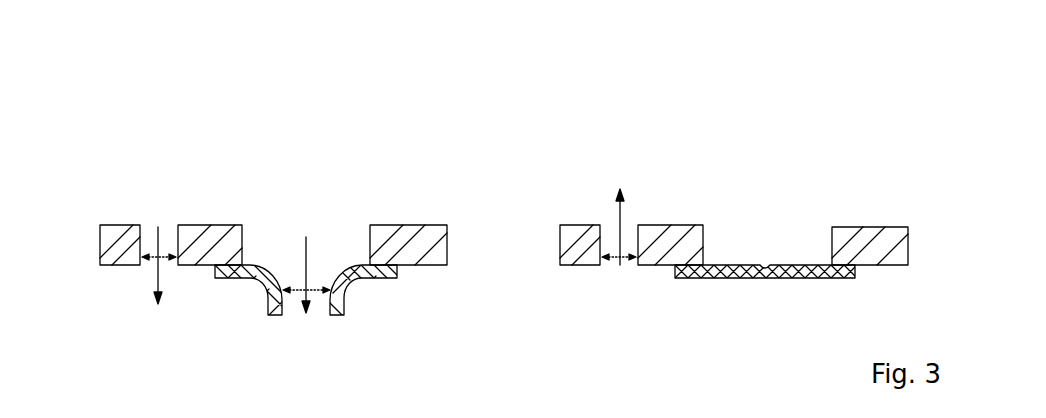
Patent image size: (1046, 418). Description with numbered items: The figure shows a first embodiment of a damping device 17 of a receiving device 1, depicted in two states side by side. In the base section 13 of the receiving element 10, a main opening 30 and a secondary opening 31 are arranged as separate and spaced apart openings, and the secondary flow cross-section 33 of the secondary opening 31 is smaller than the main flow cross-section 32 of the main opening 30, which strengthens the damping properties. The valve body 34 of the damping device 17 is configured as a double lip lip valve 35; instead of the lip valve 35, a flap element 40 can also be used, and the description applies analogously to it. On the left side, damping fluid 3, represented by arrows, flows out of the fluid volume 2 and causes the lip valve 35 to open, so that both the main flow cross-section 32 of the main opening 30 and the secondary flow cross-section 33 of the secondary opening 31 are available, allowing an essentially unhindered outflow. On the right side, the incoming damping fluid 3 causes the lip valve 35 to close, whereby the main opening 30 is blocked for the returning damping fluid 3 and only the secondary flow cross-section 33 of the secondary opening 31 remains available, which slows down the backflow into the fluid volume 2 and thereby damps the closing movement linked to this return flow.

The receiving device 1 is at (163, 97).
The fluid volume 2 is at (216, 150).
The damping fluid 3 is at (148, 262).
The receiving element 10 is at (331, 214).
The base section 13 is at (130, 226).
The damping device 17 is at (253, 177).
The main opening 30 is at (332, 240).
The secondary opening 31 is at (168, 240).
The main flow cross-section 32 is at (322, 293).
The secondary flow cross-section 33 is at (172, 265).
The valve body 34 is at (532, 300).
The lip valve 35 is at (528, 297).
The flap element 40 is at (345, 291).